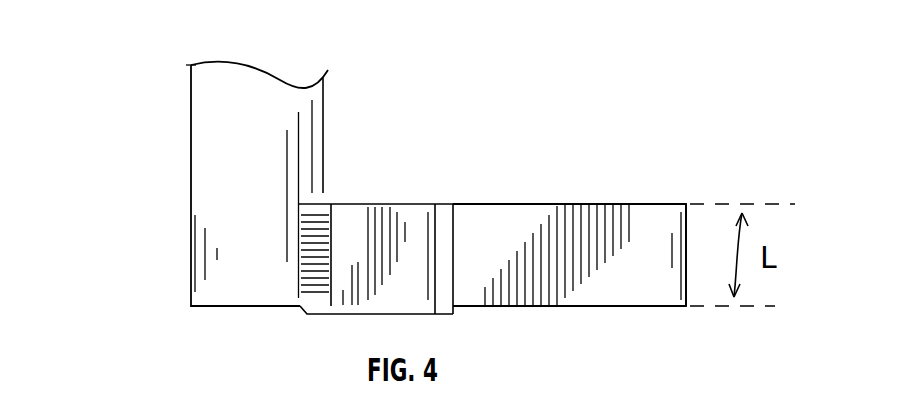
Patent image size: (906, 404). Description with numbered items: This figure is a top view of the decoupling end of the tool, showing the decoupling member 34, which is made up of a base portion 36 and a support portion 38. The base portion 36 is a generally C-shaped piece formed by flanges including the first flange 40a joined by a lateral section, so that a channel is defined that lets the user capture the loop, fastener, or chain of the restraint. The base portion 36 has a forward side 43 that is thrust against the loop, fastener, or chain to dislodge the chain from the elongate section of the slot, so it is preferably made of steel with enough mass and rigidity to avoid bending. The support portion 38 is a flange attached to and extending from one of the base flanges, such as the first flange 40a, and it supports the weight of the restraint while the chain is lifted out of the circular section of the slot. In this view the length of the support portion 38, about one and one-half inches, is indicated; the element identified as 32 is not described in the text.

The first rod member 32 is at (212, 142).
The decoupling member 34 is at (527, 193).
The base portion 36 is at (418, 205).
The support portion 38 is at (648, 203).
The first flange 40a is at (363, 215).
The forward side 43 is at (337, 315).